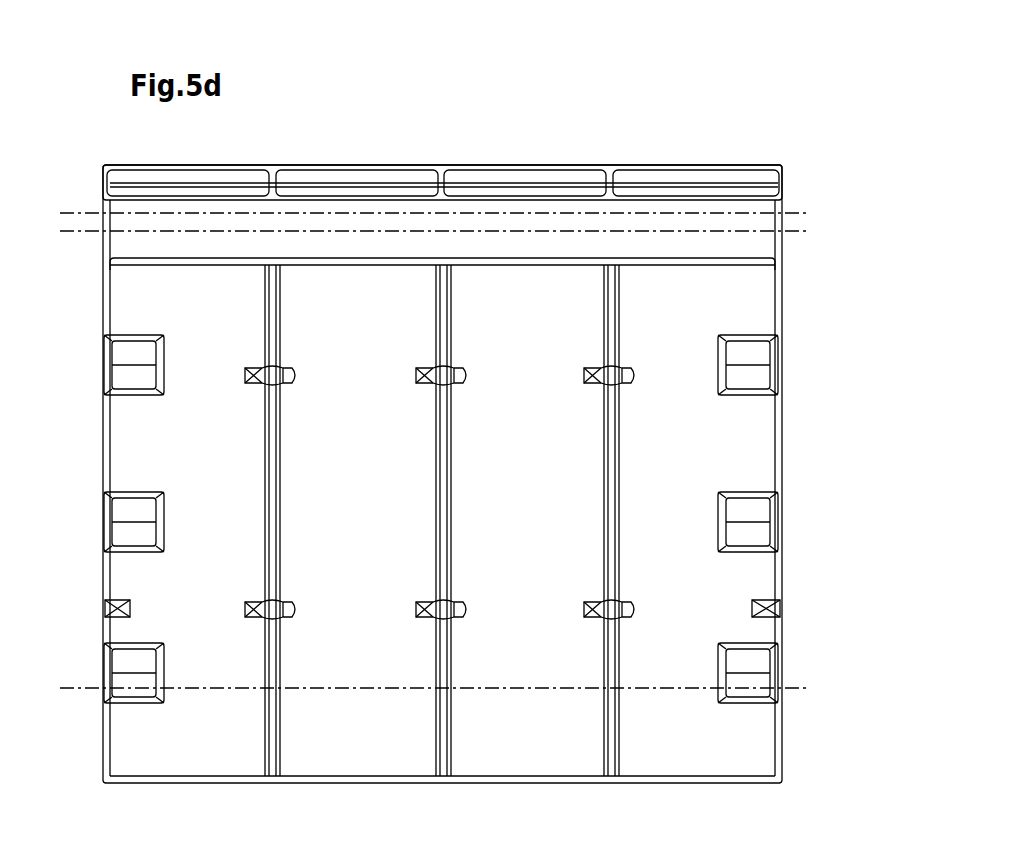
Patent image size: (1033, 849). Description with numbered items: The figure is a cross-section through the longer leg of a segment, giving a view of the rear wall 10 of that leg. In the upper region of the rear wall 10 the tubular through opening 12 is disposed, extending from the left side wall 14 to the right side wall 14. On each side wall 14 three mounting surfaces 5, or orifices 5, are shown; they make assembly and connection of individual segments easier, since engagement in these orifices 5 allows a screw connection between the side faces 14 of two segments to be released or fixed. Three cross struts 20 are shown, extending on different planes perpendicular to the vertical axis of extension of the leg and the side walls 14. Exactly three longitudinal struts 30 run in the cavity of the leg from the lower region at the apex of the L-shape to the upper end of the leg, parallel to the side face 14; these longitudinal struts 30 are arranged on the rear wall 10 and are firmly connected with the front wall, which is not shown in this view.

The tubular through opening 12 is at (774, 219).
The rear wall 10 is at (742, 303).
The mounting surface 5 is at (783, 346).
The side wall 14 is at (102, 456).
The cross strut 20 is at (440, 367).
The longitudinal strut 30 is at (435, 519).